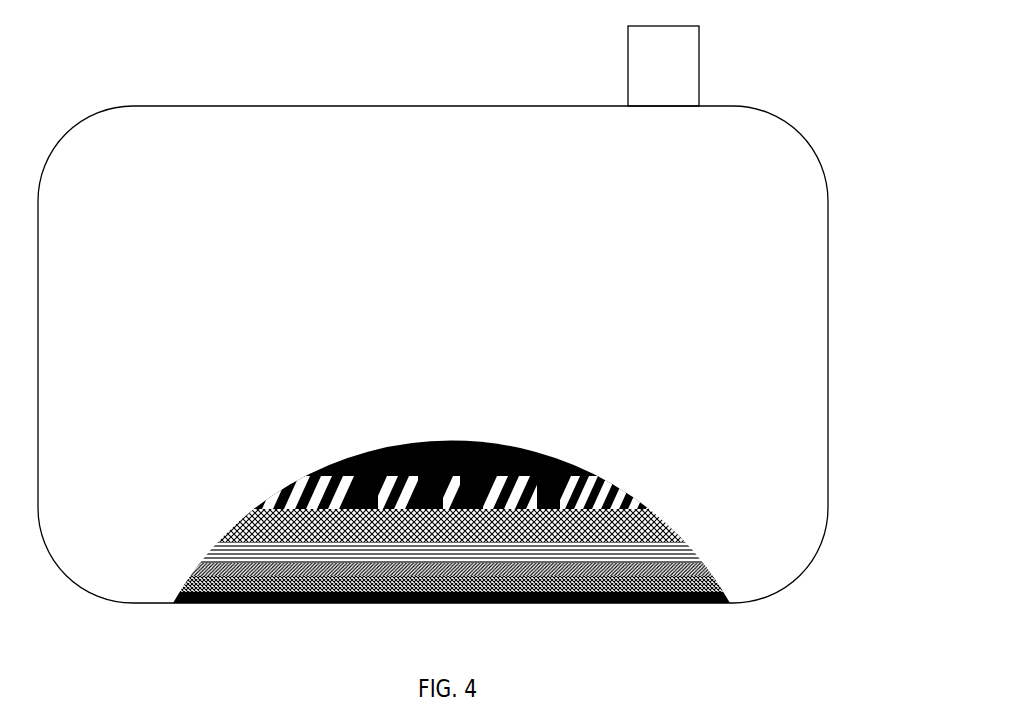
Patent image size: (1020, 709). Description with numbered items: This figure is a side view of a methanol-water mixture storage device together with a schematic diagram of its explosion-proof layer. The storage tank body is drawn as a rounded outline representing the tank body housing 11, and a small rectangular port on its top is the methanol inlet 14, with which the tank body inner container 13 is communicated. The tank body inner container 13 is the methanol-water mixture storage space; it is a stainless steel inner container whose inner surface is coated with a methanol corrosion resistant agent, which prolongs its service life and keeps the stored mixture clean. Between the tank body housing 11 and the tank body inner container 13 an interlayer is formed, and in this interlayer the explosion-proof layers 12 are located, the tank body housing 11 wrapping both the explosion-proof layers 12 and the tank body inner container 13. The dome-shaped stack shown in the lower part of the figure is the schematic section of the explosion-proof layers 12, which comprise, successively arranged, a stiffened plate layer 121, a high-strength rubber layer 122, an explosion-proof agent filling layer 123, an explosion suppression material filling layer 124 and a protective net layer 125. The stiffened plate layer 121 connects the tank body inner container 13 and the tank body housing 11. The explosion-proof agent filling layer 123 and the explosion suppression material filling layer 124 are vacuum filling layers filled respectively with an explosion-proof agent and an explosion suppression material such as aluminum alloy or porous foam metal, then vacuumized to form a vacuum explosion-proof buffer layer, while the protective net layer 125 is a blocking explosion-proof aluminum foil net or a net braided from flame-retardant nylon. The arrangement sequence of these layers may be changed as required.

The tank body housing 11 is at (320, 603).
The explosion-proof layer 12 is at (466, 528).
The stiffened plate layer 121 is at (462, 575).
The high-strength rubber layer 122 is at (704, 563).
The explosion-proof agent filling layer 123 is at (692, 550).
The explosion suppression material filling layer 124 is at (676, 519).
The protective net layer 125 is at (645, 502).
The tank body inner container 13 is at (399, 450).
The methanol inlet 14 is at (700, 63).